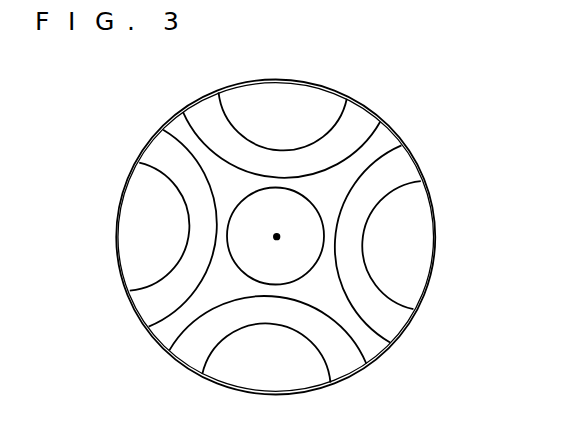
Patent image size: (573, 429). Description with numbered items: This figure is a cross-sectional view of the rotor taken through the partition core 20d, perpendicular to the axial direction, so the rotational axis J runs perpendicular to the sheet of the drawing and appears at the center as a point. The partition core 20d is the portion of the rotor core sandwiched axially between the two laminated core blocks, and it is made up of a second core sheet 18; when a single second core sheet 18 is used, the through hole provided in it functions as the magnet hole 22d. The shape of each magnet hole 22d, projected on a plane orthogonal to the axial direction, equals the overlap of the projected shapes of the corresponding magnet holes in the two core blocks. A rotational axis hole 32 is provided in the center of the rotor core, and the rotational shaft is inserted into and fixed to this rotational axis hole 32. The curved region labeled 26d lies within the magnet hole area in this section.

The second core sheet 18 is at (368, 343).
The partition core 20d is at (397, 125).
The magnet hole 22d is at (319, 142).
The groove 26d is at (237, 146).
The rotational axis hole 32 is at (229, 229).
The rotational axis J is at (276, 240).